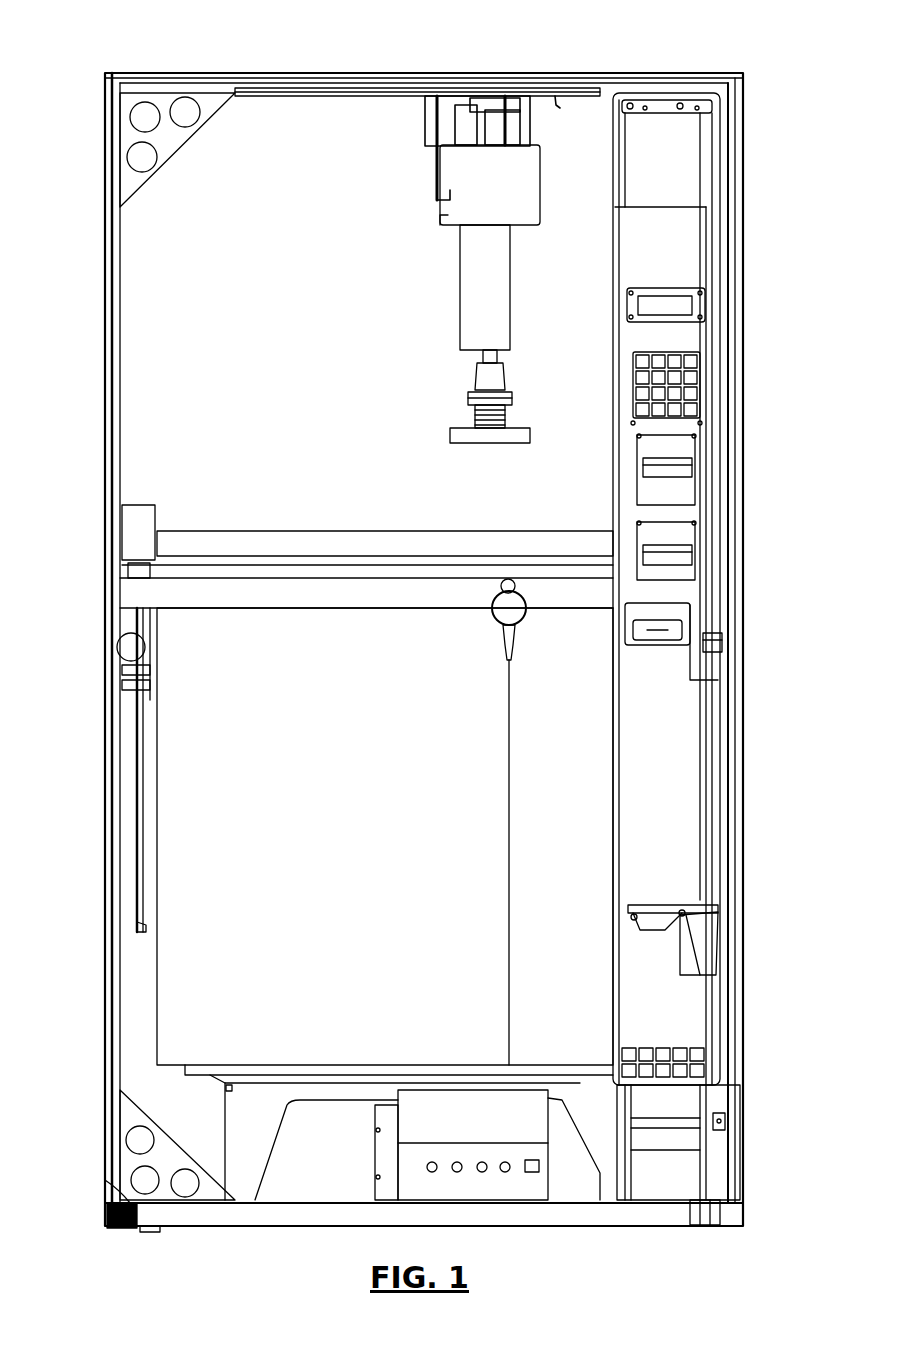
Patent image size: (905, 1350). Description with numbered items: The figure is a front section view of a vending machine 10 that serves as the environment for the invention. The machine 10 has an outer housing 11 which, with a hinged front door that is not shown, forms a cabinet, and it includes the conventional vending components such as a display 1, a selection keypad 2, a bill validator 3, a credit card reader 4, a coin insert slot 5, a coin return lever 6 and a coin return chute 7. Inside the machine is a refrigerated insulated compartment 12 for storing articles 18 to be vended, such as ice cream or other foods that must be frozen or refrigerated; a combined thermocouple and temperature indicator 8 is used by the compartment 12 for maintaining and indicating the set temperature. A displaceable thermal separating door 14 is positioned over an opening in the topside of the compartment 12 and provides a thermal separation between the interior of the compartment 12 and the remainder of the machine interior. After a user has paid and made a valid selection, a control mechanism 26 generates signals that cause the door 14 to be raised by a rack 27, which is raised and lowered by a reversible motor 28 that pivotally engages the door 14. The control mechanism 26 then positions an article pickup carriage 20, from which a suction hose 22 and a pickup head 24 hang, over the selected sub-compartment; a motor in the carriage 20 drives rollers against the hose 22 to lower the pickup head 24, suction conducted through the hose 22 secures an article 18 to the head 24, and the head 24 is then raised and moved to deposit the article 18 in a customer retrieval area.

The vending machine 10 is at (742, 33).
The outer housing 11 is at (745, 118).
The display 1 is at (688, 307).
The selection keypad 2 is at (697, 378).
The bill validator 3 is at (672, 462).
The credit card reader 4 is at (672, 545).
The coin insert slot 5 is at (668, 617).
The coin return lever 6 is at (712, 652).
The coin return chute 7 is at (678, 912).
The combined thermocouple and temperature indicator 8 is at (495, 623).
The refrigerated insulated compartment 12 is at (335, 884).
The displaceable thermal separating door 14 is at (230, 530).
The articles 18 is at (455, 445).
The article pickup carriage 20 is at (473, 190).
The suction hose 22 is at (478, 355).
The pickup head 24 is at (478, 423).
The control mechanism 26 is at (430, 1112).
The rack 27 is at (135, 810).
The reversible motor 28 is at (127, 697).